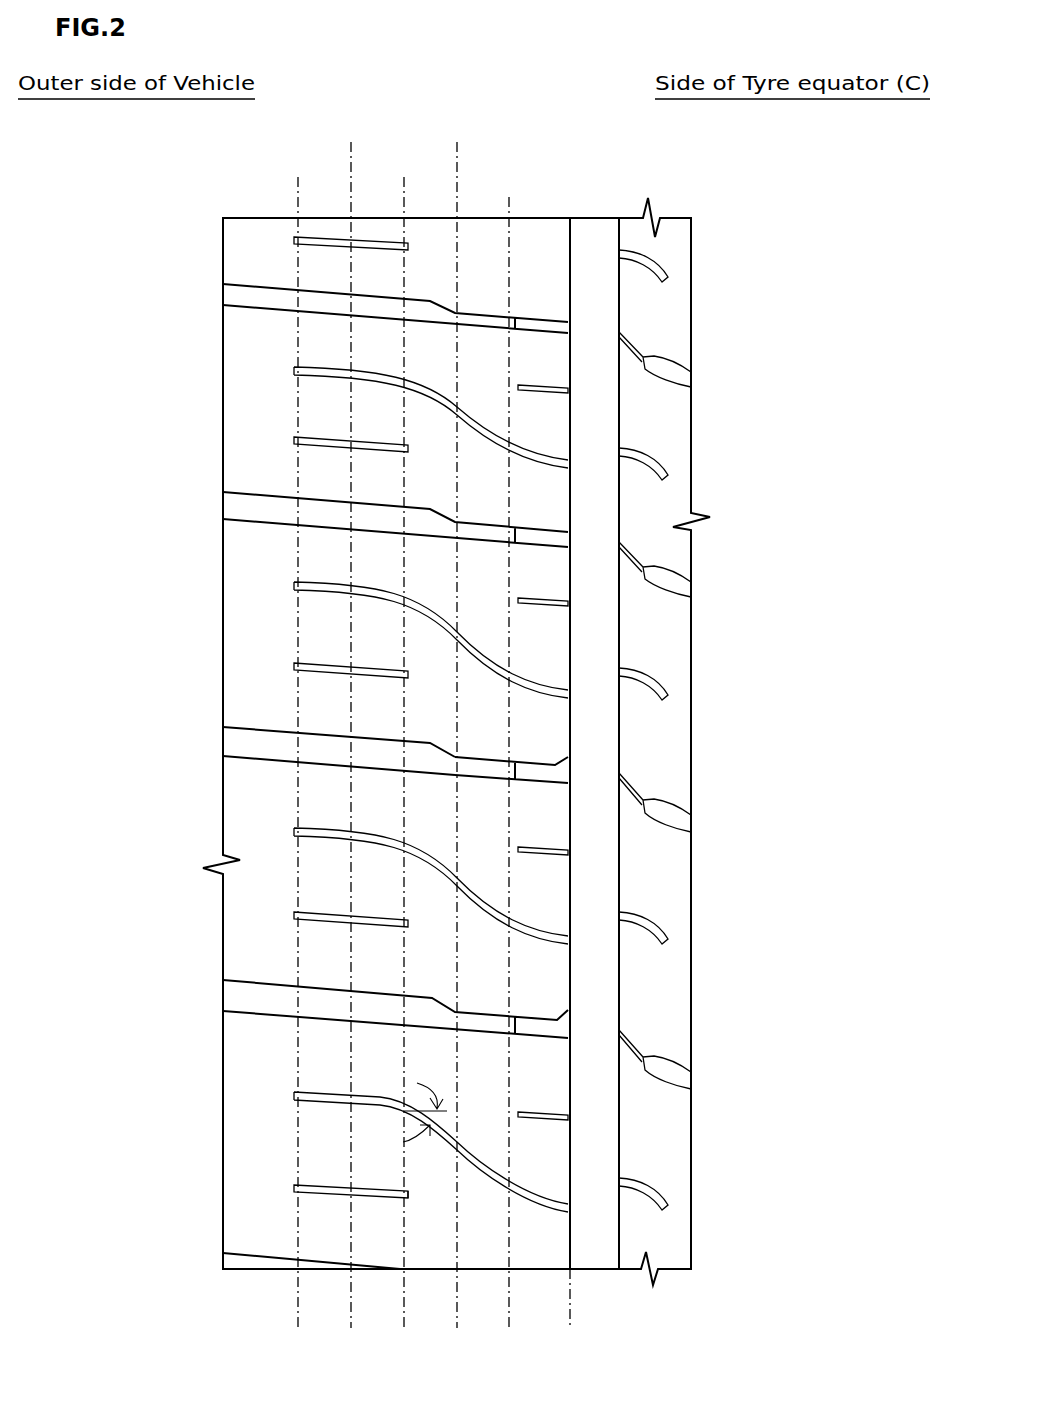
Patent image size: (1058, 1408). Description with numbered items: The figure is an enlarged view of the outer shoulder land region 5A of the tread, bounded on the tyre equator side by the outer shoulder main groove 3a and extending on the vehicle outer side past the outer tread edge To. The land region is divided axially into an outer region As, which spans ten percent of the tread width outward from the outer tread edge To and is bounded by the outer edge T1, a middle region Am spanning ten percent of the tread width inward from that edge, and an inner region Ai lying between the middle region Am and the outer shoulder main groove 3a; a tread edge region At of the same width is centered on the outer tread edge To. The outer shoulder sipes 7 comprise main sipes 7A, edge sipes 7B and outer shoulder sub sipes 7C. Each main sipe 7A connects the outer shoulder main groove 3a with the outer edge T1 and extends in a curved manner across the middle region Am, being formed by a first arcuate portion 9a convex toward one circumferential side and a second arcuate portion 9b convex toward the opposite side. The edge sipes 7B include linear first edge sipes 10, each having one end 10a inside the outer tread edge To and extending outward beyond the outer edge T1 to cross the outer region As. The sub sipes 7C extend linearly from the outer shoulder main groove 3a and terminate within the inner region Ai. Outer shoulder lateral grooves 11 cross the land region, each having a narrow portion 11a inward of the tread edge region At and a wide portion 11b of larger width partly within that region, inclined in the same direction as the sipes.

The outer shoulder main groove 3a is at (603, 246).
The outer shoulder land region 5A is at (543, 246).
The outer edge of the outer region T1 is at (297, 188).
The outer tread edge To is at (403, 190).
The tread edge region At is at (457, 142).
The outer region As is at (404, 1310).
The middle region Am is at (509, 1310).
The inner region Ai is at (570, 1310).
The outer shoulder lateral groove 11 is at (313, 683).
The narrow portion 11a is at (485, 772).
The wide portion 11b is at (327, 750).
The first arcuate portion 9a is at (430, 610).
The second arcuate portion 9b is at (480, 657).
The outer shoulder sipe 7 is at (334, 1152).
The main sipe 7A is at (363, 1103).
The edge sipe 7B is at (246, 1215).
The outer shoulder sub sipe 7C is at (545, 1113).
The first edge sipe 10 is at (327, 1188).
The one end of the first edge sipe 10a is at (407, 1198).